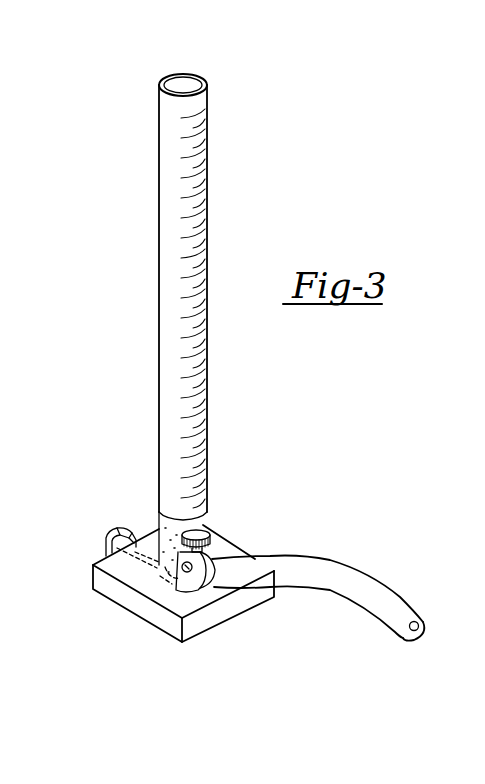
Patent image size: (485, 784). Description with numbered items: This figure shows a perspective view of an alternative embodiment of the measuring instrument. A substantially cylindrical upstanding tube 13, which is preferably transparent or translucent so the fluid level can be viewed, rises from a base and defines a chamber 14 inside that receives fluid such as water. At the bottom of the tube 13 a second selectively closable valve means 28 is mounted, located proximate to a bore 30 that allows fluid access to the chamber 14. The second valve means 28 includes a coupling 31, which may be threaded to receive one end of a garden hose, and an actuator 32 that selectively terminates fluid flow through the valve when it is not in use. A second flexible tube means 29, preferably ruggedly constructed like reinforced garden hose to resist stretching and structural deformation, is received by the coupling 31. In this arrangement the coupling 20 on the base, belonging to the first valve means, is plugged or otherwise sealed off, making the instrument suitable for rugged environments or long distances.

The tube 13 is at (160, 159).
The chamber 14 is at (224, 197).
The coupling 20 is at (103, 553).
The second selectively closable valve means 28 is at (178, 580).
The second flexible tube means 29 is at (322, 558).
The bore 30 is at (159, 565).
The coupling 31 is at (183, 589).
The actuator 32 is at (214, 530).